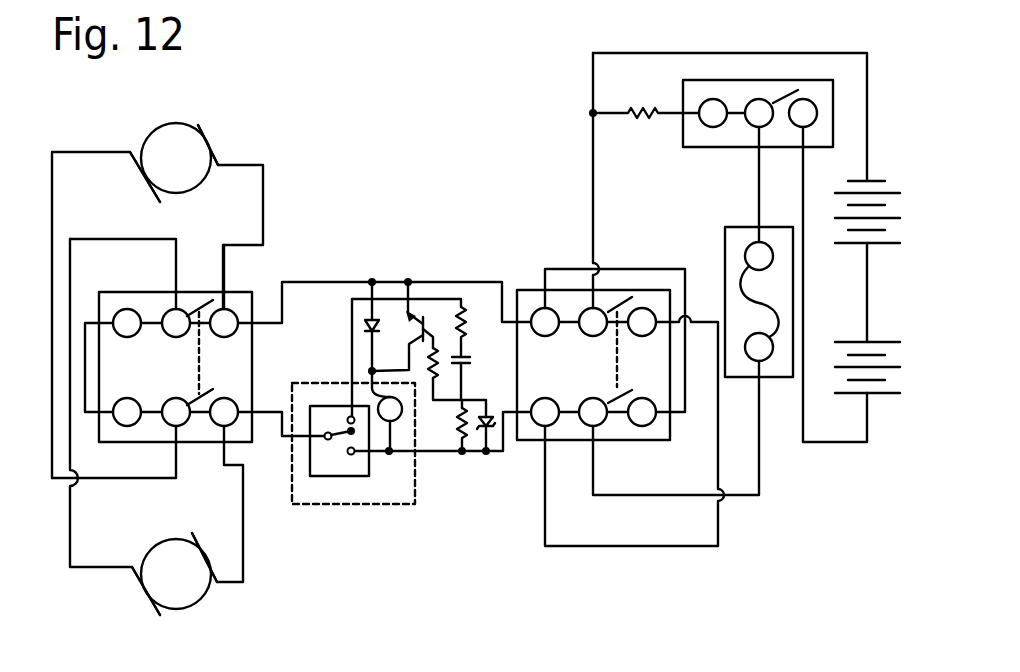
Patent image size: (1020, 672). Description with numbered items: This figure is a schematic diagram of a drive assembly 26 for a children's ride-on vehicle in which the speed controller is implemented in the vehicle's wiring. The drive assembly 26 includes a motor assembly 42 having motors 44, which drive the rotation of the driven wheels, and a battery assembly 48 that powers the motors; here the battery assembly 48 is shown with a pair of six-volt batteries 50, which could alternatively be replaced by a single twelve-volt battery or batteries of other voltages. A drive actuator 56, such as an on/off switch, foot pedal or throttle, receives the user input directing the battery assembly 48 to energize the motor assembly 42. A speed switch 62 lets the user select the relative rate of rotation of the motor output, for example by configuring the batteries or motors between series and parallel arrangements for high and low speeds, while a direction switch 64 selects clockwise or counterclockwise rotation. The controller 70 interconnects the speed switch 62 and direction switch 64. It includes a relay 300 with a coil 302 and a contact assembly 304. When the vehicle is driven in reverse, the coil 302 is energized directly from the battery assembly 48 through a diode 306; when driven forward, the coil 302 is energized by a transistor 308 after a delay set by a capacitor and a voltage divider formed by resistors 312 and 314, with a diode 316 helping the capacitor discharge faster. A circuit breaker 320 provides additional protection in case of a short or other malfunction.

The drive assembly 26 is at (781, 42).
The motor assembly 42 is at (203, 122).
The motor 44 is at (218, 163).
The battery assembly 48 is at (857, 251).
The battery 50 is at (875, 247).
The drive actuator 56 is at (711, 153).
The speed switch 62 is at (247, 284).
The direction switch 64 is at (629, 449).
The controller 70 is at (415, 526).
The relay 300 is at (333, 506).
The coil 302 is at (378, 396).
The contact assembly 304 is at (340, 405).
The diode 306 is at (352, 318).
The transistor 308 is at (427, 318).
The resistor 312 is at (470, 318).
The resistor 314 is at (455, 428).
The diode 316 is at (488, 415).
The circuit breaker 320 is at (768, 380).